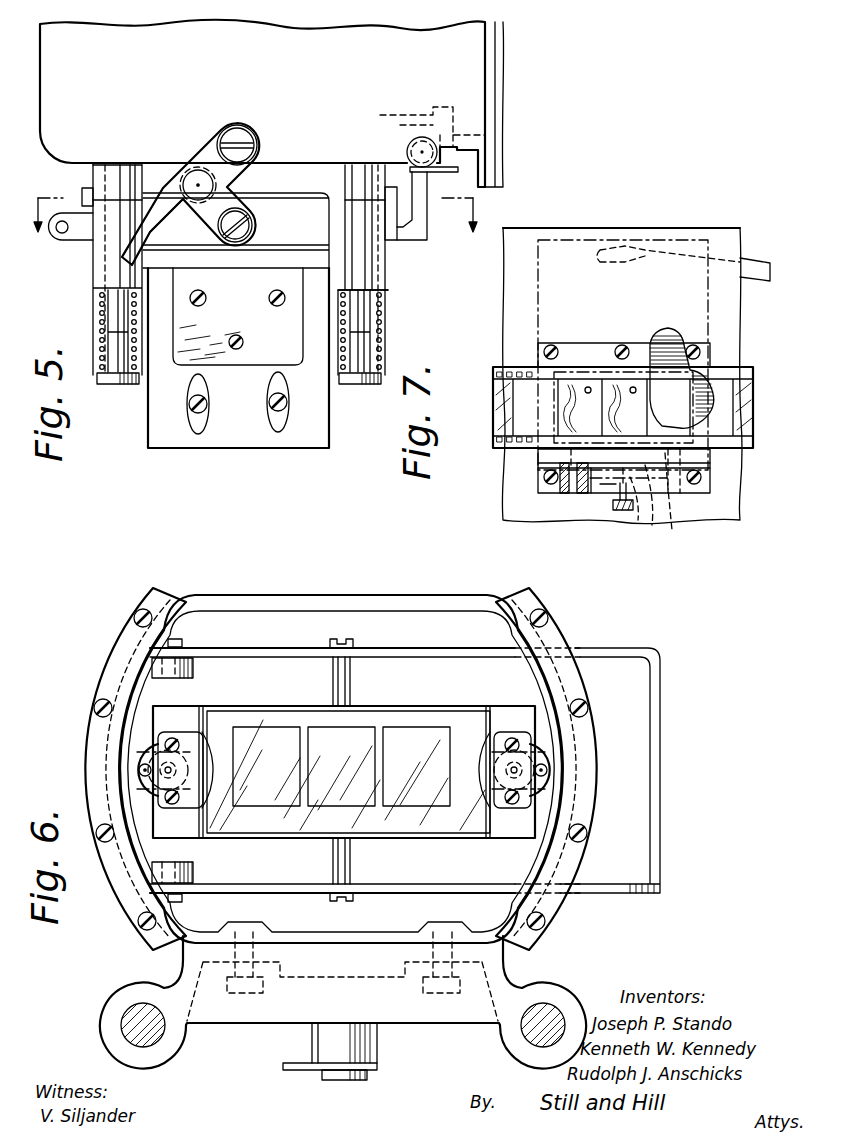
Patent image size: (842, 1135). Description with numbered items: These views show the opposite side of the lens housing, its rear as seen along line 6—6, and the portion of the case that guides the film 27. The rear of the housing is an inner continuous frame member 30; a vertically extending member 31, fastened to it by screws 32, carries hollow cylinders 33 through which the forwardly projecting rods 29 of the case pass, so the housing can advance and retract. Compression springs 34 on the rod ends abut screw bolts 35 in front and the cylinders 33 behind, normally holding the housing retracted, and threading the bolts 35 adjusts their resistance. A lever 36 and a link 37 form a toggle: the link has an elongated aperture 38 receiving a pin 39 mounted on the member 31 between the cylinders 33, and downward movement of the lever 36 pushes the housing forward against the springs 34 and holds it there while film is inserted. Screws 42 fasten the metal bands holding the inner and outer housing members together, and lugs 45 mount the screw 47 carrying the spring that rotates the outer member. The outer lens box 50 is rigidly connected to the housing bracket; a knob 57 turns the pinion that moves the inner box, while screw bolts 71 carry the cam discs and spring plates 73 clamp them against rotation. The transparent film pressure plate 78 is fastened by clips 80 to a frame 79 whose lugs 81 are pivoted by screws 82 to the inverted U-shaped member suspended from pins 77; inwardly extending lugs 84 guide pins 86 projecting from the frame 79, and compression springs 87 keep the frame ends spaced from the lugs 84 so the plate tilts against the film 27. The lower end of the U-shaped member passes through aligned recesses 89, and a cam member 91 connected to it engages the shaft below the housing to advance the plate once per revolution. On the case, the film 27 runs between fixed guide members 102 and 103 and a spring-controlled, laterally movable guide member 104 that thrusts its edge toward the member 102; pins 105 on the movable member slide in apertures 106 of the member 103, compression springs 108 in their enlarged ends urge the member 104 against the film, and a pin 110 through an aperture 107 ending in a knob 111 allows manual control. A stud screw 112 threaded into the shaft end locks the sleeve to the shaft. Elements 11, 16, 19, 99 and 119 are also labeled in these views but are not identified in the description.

In FIG. 5, the line 6— 6 is at (249, 223).
In FIG. 6, the arcuate frame band 11 is at (120, 660).
In FIG. 6, the guide rails 16 is at (383, 648).
In FIG. 6, the left guide block 19 is at (195, 706).
In FIG. 7, the film 27 is at (502, 363).
In FIG. 5, the rods 29 is at (366, 322).
In FIG. 6, the inner continuous frame member 30 is at (207, 602).
In FIG. 5, the vertically extending member 31 is at (285, 213).
In FIG. 6, the vertically extending member 31 is at (388, 1013).
In FIG. 6, the screws 32 is at (263, 993).
In FIG. 5, the hollow cylinders 33 is at (104, 292).
In FIG. 6, the hollow cylinders 33 is at (123, 988).
In FIG. 5, the compression springs 34 is at (103, 341).
In FIG. 5, the screw bolts 35 is at (122, 383).
In FIG. 6, the screw bolts 35 is at (158, 1036).
In FIG. 5, the lever 36 is at (212, 157).
In FIG. 5, the link 37 is at (213, 212).
In FIG. 5, the elongated aperture 38 is at (216, 232).
In FIG. 5, the pin 39 is at (250, 212).
In FIG. 6, the pin 39 is at (320, 1074).
In FIG. 6, the screws 42 is at (612, 708).
In FIG. 5, the lugs 45 is at (90, 242).
In FIG. 5, the screw 47 is at (63, 221).
In FIG. 5, the outer lens box 50 is at (152, 440).
In FIG. 6, the knob 57 is at (287, 1062).
In FIG. 5, the screw bolts 71 is at (287, 403).
In FIG. 5, the spring plates 73 is at (273, 420).
In FIG. 6, the pins 77 is at (182, 643).
In FIG. 6, the transparent film pressure plate 78 is at (397, 713).
In FIG. 6, the frame 79 is at (507, 706).
In FIG. 6, the clips 80 is at (207, 757).
In FIG. 6, the forwardly extending lugs 81 is at (528, 745).
In FIG. 6, the screws 82 is at (333, 641).
In FIG. 6, the inwardly extending lugs 84 is at (150, 745).
In FIG. 6, the pins 86 is at (145, 777).
In FIG. 6, the compression springs 87 is at (182, 769).
In FIG. 6, the aligned recesses 89 is at (570, 652).
In FIG. 5, the cam member 91 is at (422, 225).
In FIG. 6, the cam member 91 is at (643, 895).
In FIG. 7, the film perforations 99 is at (518, 371).
In FIG. 7, the guide member 102 is at (577, 348).
In FIG. 7, the guide member 103 is at (600, 487).
In FIG. 7, the laterally movable guide member 104 is at (537, 452).
In FIG. 7, the pins 105 is at (575, 490).
In FIG. 7, the apertures 106 is at (588, 492).
In FIG. 7, the aperture 107 is at (645, 482).
In FIG. 7, the compression springs 108 is at (564, 487).
In FIG. 7, the pin 110 is at (630, 482).
In FIG. 6, the pin 110 is at (112, 845).
In FIG. 7, the knob 111 is at (622, 513).
In FIG. 5, the stud screw 112 is at (406, 148).
In FIG. 6, the stud screw 112 is at (96, 700).
In FIG. 5, the pin 119 is at (223, 357).
In FIG. 7, the pin 119 is at (662, 509).